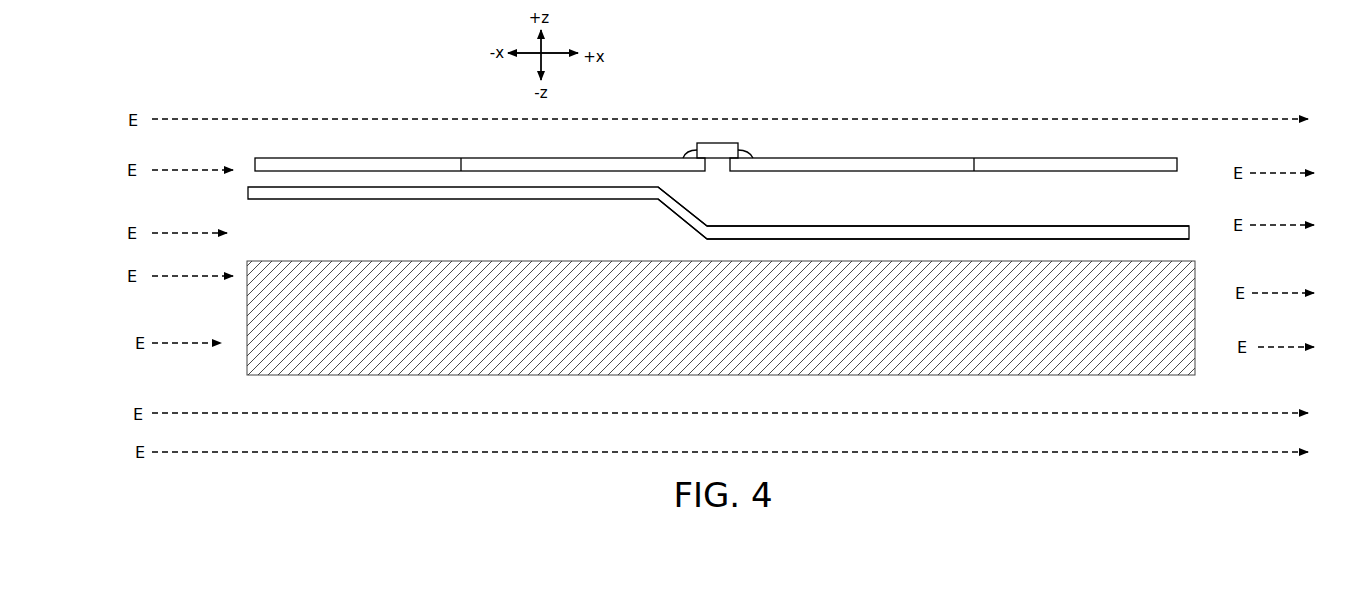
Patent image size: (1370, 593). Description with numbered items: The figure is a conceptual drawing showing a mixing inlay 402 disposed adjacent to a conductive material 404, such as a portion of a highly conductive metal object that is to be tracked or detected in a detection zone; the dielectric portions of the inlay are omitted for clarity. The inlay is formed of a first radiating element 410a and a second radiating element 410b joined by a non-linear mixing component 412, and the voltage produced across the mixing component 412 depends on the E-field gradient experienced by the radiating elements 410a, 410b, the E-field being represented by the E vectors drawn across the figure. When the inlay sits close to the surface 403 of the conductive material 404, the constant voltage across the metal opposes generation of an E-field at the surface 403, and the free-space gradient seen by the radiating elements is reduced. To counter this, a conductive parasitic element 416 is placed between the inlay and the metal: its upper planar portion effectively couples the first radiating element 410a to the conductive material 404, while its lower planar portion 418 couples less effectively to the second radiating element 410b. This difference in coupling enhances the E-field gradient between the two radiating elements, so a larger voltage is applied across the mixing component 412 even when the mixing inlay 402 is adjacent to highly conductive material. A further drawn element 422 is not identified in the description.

The mixing inlay 402 is at (758, 170).
The surface 403 is at (487, 257).
The conductive material 404 is at (720, 304).
The first radiating element 410a is at (432, 146).
The second radiating element 410b is at (1016, 179).
The mixing component 412 is at (738, 146).
The conductive parasitic element 416 is at (658, 212).
The lower planar portion 418 is at (907, 221).
The conductive plate 422 is at (336, 205).